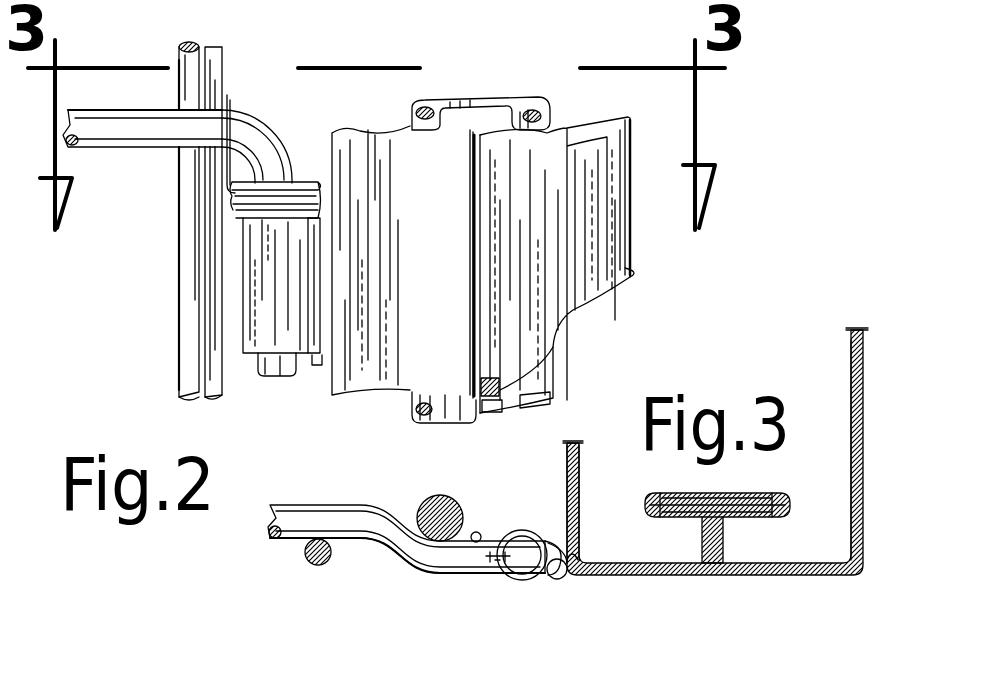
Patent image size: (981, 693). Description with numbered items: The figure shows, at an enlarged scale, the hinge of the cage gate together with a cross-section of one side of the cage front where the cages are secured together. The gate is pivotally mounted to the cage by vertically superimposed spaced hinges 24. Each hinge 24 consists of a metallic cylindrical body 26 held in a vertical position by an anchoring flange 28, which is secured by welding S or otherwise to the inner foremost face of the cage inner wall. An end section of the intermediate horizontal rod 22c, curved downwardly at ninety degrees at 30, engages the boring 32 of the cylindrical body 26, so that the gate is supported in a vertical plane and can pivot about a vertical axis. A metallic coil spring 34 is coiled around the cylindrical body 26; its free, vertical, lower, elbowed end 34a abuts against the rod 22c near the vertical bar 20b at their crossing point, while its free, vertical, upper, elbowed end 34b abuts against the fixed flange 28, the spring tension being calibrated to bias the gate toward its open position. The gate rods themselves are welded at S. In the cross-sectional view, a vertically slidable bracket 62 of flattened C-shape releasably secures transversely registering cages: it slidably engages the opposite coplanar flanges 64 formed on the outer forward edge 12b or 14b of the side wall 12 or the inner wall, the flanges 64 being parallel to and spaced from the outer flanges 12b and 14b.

In FIG. 3, the side wall 12 is at (853, 352).
In FIG. 2, the outer forward edge 12b is at (550, 347).
In FIG. 3, the outer forward edge 12b is at (815, 563).
In FIG. 2, the outer forward edge 14b is at (375, 362).
In FIG. 3, the outer forward edge 14b is at (637, 567).
In FIG. 2, the vertical rod 20b is at (197, 249).
In FIG. 3, the vertical rod 20b is at (452, 508).
In FIG. 2, the intermediate horizontal rod 22c is at (80, 110).
In FIG. 3, the intermediate horizontal rod 22c is at (270, 532).
In FIG. 2, the hinge 24 is at (298, 135).
In FIG. 3, the hinge 24 is at (490, 600).
In FIG. 2, the cylindrical body 26 is at (273, 335).
In FIG. 3, the cylindrical body 26 is at (507, 577).
In FIG. 2, the anchoring flange 28 is at (345, 215).
In FIG. 2, the downwardly curved end section 30 is at (273, 378).
In FIG. 3, the boring 32 is at (522, 540).
In FIG. 2, the coil spring 34 is at (178, 213).
In FIG. 3, the coil spring 34 is at (552, 580).
In FIG. 2, the lower elbowed end 34a is at (325, 365).
In FIG. 3, the lower elbowed end 34a is at (542, 577).
In FIG. 2, the upper elbowed end 34b is at (236, 103).
In FIG. 3, the upper elbowed end 34b is at (477, 533).
In FIG. 2, the bracket 62 is at (500, 98).
In FIG. 3, the bracket 62 is at (752, 493).
In FIG. 3, the flange 64 is at (650, 493).
In FIG. 3, the weld S is at (583, 565).